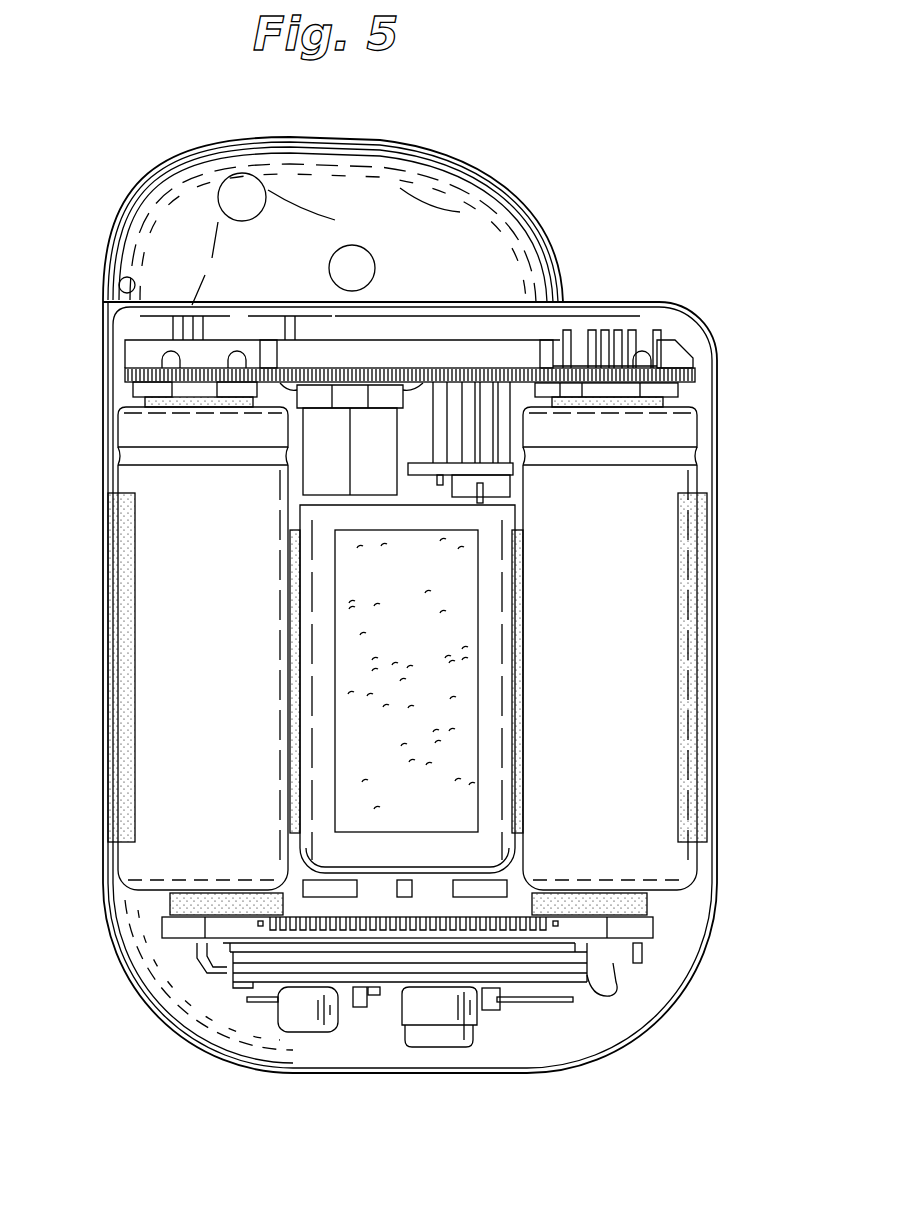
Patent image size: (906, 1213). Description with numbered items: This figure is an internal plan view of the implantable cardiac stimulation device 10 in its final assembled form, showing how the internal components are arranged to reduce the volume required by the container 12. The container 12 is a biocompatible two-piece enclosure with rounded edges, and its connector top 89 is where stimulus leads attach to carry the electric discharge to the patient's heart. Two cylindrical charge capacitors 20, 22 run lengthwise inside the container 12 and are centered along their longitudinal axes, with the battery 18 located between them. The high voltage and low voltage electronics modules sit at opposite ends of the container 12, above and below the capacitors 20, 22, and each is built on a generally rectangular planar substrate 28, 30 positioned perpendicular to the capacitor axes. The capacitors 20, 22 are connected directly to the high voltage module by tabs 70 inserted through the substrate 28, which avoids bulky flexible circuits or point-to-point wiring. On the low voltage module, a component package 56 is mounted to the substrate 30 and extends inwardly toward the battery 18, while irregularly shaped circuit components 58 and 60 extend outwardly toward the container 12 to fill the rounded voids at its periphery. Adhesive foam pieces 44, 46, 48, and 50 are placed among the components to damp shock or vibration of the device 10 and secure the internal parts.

The implantable cardiac stimulation device 10 is at (636, 120).
The container 12 is at (718, 366).
The connector top 89 is at (470, 267).
The tabs 70 is at (163, 354).
The substrate 28 is at (128, 362).
The adhesive foam piece 48 is at (128, 401).
The charge capacitor 22 is at (148, 518).
The charge capacitor 20 is at (655, 520).
The adhesive foam piece 50 is at (112, 816).
The adhesive foam piece 44 is at (368, 667).
The battery 18 is at (318, 744).
The adhesive foam piece 46 is at (172, 905).
The substrate 30 is at (652, 930).
The component package 56 is at (492, 907).
The circuit component 58 is at (295, 1025).
The circuit component 60 is at (422, 1037).